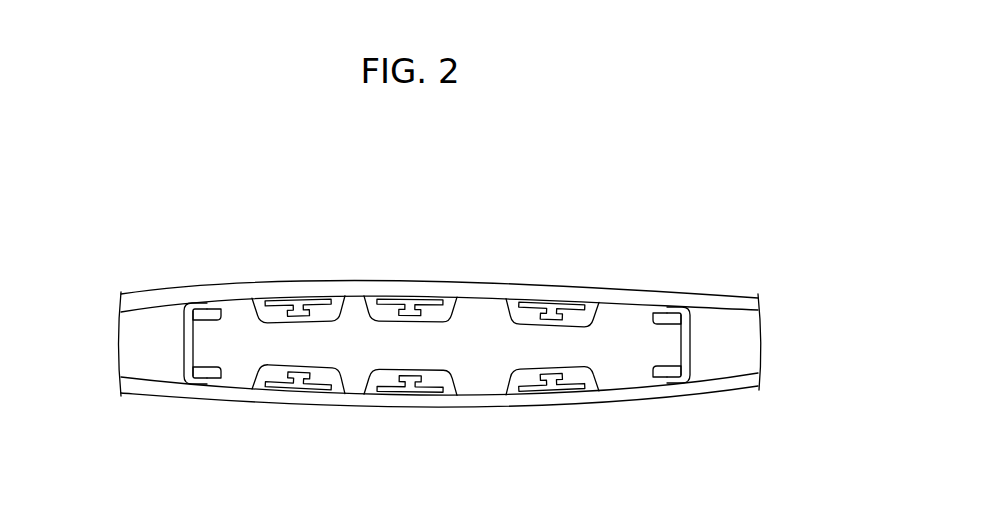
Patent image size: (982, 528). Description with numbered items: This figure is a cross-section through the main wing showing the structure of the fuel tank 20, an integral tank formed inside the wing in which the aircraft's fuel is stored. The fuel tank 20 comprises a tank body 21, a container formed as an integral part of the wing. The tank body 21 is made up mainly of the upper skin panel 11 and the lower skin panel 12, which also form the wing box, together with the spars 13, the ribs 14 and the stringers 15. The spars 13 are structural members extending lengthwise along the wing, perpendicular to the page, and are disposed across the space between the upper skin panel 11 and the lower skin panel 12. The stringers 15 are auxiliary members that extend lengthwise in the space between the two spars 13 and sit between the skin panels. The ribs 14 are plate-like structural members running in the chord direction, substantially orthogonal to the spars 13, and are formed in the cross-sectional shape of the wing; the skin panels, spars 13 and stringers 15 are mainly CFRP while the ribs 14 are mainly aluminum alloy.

The fuel tank 20 is at (161, 181).
The tank body 21 is at (234, 280).
The upper skin panel 11 is at (351, 290).
The lower skin panel 12 is at (357, 402).
The spars 13 is at (184, 366).
The ribs 14 is at (478, 330).
The stringers 15 is at (298, 297).